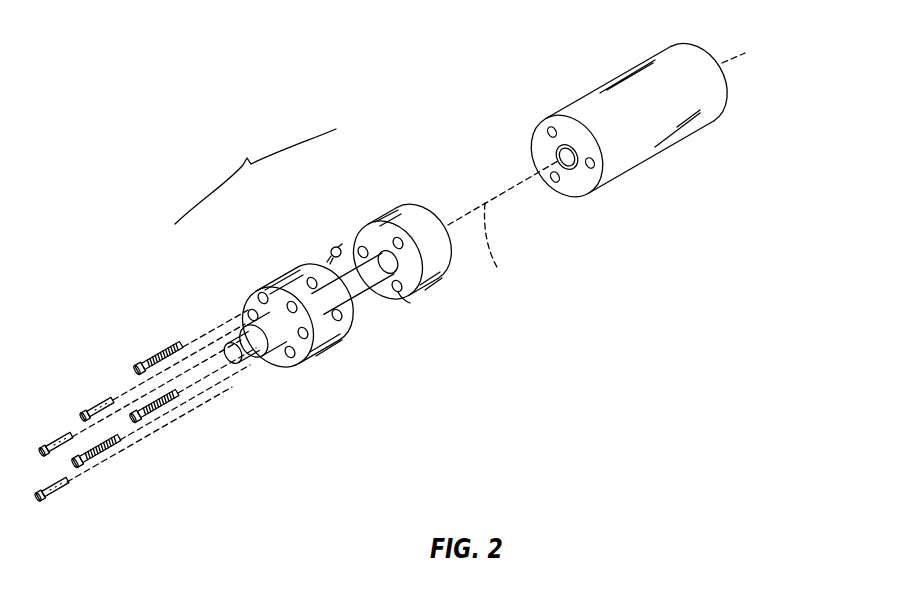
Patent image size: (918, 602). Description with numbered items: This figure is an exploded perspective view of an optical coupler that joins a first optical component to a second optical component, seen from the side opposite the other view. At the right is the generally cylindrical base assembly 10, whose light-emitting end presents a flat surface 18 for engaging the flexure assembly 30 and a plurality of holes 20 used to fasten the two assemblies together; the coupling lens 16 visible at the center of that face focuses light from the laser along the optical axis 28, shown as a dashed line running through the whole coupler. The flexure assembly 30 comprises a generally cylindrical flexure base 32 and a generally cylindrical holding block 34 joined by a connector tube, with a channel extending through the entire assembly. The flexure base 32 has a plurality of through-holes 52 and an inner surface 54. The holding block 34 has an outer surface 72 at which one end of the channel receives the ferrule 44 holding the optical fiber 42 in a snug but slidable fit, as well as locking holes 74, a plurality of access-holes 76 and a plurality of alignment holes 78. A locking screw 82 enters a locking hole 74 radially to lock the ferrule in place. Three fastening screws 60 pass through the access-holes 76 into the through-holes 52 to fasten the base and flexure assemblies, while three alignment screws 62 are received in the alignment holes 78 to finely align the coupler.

The base assembly 10 is at (616, 68).
The coupling lens 16 is at (575, 170).
The flat surface 18 is at (551, 182).
The holes 20 is at (546, 129).
The optical axis 28 is at (596, 171).
The flexure assembly 30 is at (255, 176).
The flexure base 32 is at (386, 200).
The holding block 34 is at (268, 262).
The optical fiber 42 is at (240, 345).
The ferrule 44 is at (258, 345).
The through-holes 52 is at (402, 288).
The inner surface 54 is at (398, 297).
The fastening screws 60 is at (56, 492).
The alignment screws 62 is at (163, 416).
The outer surface 72 is at (248, 303).
The locking holes 74 is at (340, 318).
The access-holes 76 is at (294, 357).
The alignment holes 78 is at (316, 342).
The locking screw 82 is at (334, 247).